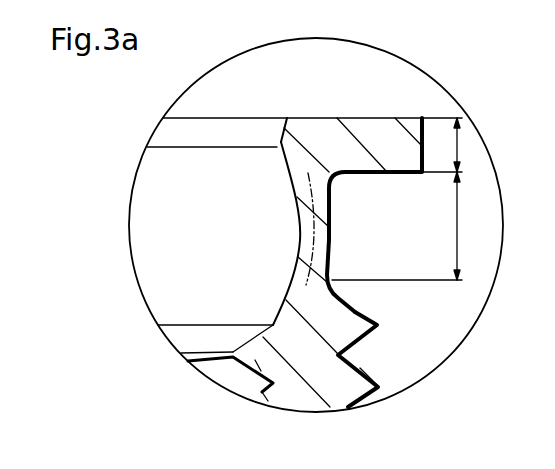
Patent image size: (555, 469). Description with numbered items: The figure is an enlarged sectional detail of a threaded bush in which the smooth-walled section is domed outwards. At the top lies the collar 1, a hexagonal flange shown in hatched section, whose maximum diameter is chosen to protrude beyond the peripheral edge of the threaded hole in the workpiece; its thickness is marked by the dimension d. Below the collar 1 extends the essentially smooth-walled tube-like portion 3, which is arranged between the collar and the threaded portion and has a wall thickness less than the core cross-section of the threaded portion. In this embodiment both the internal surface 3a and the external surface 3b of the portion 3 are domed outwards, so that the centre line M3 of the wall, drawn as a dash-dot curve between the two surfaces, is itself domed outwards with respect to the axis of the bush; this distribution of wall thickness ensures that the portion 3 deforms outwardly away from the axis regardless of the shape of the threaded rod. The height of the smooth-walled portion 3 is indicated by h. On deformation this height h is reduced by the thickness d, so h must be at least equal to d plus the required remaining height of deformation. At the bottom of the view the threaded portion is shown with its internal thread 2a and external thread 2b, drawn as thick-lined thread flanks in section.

The collar 1 is at (357, 130).
The internal thread 2a is at (262, 392).
The external thread 2b is at (356, 376).
The tube-like portion 3 is at (316, 233).
The internal surface 3a is at (297, 247).
The external surface 3b is at (332, 211).
The centre line M3 is at (275, 227).
The thickness of the collar d is at (454, 145).
The height of the smooth-walled portion h is at (454, 226).